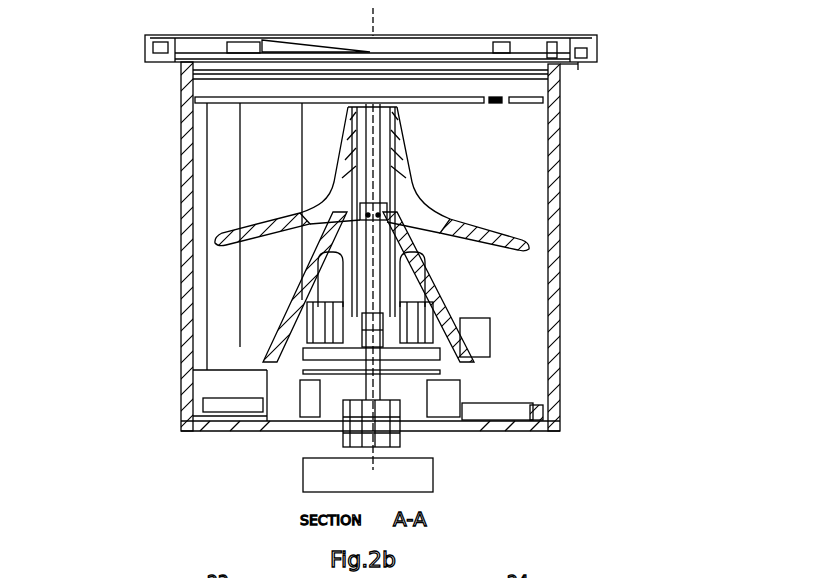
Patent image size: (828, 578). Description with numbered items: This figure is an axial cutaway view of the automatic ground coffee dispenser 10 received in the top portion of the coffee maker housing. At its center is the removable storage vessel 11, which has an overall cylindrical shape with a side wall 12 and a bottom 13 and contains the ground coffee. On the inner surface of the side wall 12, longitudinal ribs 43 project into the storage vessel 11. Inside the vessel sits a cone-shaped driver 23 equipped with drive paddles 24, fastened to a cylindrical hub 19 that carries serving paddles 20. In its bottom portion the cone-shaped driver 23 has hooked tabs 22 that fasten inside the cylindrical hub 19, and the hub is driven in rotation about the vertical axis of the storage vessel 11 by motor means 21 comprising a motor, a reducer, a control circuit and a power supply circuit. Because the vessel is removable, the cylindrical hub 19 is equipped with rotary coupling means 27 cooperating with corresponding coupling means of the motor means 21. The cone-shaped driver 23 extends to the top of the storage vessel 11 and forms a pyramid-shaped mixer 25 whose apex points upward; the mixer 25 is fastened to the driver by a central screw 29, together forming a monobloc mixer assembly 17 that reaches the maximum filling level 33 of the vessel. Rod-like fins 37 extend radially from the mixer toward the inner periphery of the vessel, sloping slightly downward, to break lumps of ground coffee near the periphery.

The automatic ground coffee dispenser 10 is at (210, 448).
The storage vessel 11 is at (577, 77).
The side wall 12 is at (561, 300).
The bottom 13 is at (557, 431).
The monobloc mixer assembly 17 is at (430, 182).
The cylindrical hub 19 is at (503, 374).
The serving paddles 20 is at (228, 410).
The motor means 21 is at (418, 476).
The hooked tabs 22 is at (252, 347).
The cone-shaped driver 23 is at (312, 276).
The drive paddles 24 is at (482, 333).
The pyramid-shaped mixer 25 is at (340, 158).
The rotary coupling means 27 is at (343, 415).
The central screw 29 is at (384, 214).
The maximum filling level 33 is at (540, 100).
The fin 37 is at (243, 228).
The longitudinal rib 43 is at (228, 128).